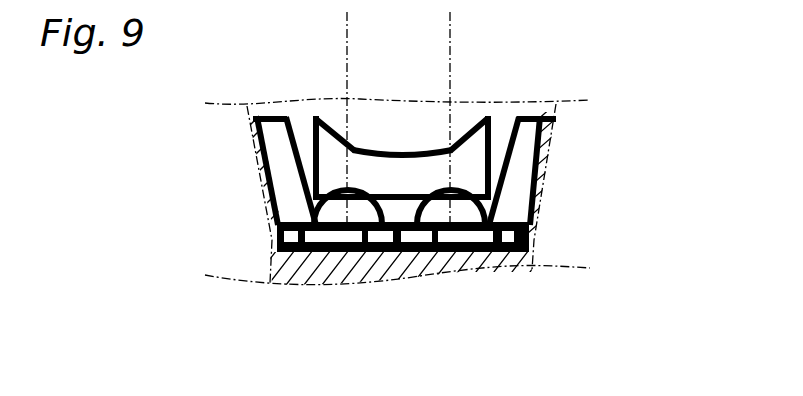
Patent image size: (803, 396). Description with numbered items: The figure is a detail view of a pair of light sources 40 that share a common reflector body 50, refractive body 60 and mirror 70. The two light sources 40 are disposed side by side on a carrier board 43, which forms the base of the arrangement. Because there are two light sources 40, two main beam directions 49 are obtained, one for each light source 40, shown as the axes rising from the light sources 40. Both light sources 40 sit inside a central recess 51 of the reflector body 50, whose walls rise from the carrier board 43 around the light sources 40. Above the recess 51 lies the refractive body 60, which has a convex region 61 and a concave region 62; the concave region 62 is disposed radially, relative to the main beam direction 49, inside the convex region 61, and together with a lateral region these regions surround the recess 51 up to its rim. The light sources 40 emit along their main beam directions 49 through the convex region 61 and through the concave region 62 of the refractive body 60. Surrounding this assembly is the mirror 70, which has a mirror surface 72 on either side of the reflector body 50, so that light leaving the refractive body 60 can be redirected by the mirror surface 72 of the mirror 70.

The light source 40 is at (372, 255).
The carrier board 43 is at (329, 262).
The main beam direction 49 is at (347, 80).
The reflector body 50 is at (285, 115).
The refractive body 60 is at (278, 105).
The central recess 51 is at (317, 197).
The convex region 61 is at (410, 166).
The concave region 62 is at (402, 142).
The mirror 70 is at (553, 137).
The mirror surface 72 is at (276, 175).